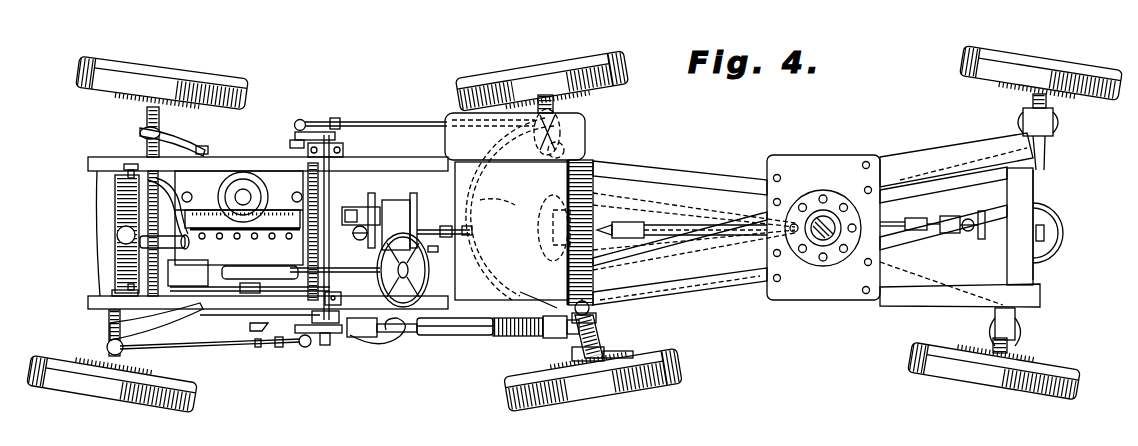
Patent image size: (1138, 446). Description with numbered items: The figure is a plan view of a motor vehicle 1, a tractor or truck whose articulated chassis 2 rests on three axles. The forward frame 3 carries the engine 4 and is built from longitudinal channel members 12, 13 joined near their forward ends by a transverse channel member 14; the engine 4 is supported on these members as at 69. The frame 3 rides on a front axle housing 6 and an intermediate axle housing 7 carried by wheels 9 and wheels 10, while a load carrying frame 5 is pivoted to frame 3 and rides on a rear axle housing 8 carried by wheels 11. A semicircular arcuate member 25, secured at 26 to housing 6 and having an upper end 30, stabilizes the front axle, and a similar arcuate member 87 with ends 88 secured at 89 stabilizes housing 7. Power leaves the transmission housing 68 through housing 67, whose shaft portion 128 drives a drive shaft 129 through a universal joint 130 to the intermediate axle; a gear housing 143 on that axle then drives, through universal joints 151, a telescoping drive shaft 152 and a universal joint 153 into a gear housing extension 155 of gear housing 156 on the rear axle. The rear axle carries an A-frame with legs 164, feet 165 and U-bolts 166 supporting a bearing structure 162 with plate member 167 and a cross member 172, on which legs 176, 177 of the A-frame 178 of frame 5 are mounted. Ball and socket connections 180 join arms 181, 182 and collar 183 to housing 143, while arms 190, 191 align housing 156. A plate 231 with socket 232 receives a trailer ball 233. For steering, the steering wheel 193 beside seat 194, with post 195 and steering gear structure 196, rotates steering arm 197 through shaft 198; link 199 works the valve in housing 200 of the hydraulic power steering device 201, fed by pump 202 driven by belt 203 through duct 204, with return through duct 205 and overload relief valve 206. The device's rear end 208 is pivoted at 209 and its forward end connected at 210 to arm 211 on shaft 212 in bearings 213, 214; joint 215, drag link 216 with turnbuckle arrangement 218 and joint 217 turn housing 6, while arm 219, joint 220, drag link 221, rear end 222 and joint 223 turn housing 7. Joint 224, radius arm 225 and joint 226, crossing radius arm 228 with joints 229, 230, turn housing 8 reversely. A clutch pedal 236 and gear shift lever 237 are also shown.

The motor vehicle 1 is at (440, 108).
The chassis 2 is at (598, 163).
The frame 3 is at (116, 172).
The engine 4 is at (280, 171).
The load carrying frame 5 is at (767, 178).
The front axle housing 6 is at (147, 117).
The intermediate axle housing 7 is at (597, 344).
The rear axle housing 8 is at (1012, 352).
The wheels 9 is at (240, 84).
The wheels 10 is at (612, 65).
The wheels 11 is at (964, 58).
The channel member 12 is at (93, 156).
The channel member 13 is at (90, 305).
The transverse channel member 14 is at (112, 293).
The arcuate member 25 is at (182, 128).
The ends securing 26 is at (139, 134).
The upper end 30 is at (203, 147).
The housing 67 is at (402, 207).
The housing 68 is at (378, 207).
The engine support 69 is at (200, 205).
The arcuate member 87 is at (497, 206).
The ends 88 is at (578, 352).
The securing points 89 is at (612, 333).
The shaft portion 128 is at (430, 229).
The drive shaft 129 is at (467, 225).
The universal joint 130 is at (433, 253).
The gear housing 143 is at (545, 248).
The universal joints 151 is at (636, 226).
The drive shaft 152 is at (665, 246).
The universal joint 153 is at (947, 232).
The gear housing extension 155 is at (990, 258).
The gear housing 156 is at (1037, 250).
The bearing structure 162 is at (1043, 202).
The legs 164 is at (1023, 130).
The feet 165 is at (1020, 118).
The U-bolts 166 is at (1052, 133).
The plate member 167 is at (1043, 180).
The cross member 172 is at (1034, 278).
The leg 176 is at (950, 162).
The leg 177 is at (932, 307).
The A-frame 178 is at (740, 282).
The ball and socket connections 180 is at (565, 272).
The arm 181 is at (710, 212).
The arm 182 is at (608, 264).
The collar 183 is at (742, 248).
The arm 190 is at (975, 202).
The arm 191 is at (980, 256).
The steering wheel 193 is at (430, 275).
The seat 194 is at (458, 192).
The post 195 is at (288, 266).
The steering gear structure 196 is at (248, 250).
The steering arm 197 is at (240, 306).
The shaft 198 is at (179, 245).
The link 199 is at (255, 329).
The housing 200 is at (365, 337).
The hydraulic power steering device 201 is at (484, 340).
The pump 202 is at (185, 311).
The belt 203 is at (118, 278).
The duct 204 is at (200, 315).
The duct 205 is at (405, 338).
The overload relief valve 206 is at (332, 301).
The rear end 208 is at (541, 338).
The pivotal connection 209 is at (527, 295).
The connection 210 is at (325, 345).
The arm 211 is at (308, 347).
The shaft 212 is at (332, 193).
The bearing 213 is at (307, 327).
The bearing 214 is at (343, 150).
The ball and socket joint 215 is at (280, 347).
The drag link 216 is at (208, 348).
The ball and socket joint 217 is at (106, 347).
The turnbuckle arrangement 218 is at (249, 362).
The arm 219 is at (296, 141).
The ball and socket joint 220 is at (305, 115).
The drag link 221 is at (405, 122).
The rear end 222 is at (515, 136).
The ball and socket joint 223 is at (570, 112).
The ball and socket joint 224 is at (598, 311).
The radius arm 225 is at (661, 290).
The ball and socket joint 226 is at (1040, 168).
The radius arm 228 is at (640, 179).
The ball and socket joint 229 is at (562, 137).
The ball and socket joint 230 is at (995, 318).
The plate 231 is at (870, 157).
The socket 232 is at (801, 210).
The ball 233 is at (826, 215).
The clutch pedal 236 is at (358, 240).
The gear shift lever 237 is at (361, 216).